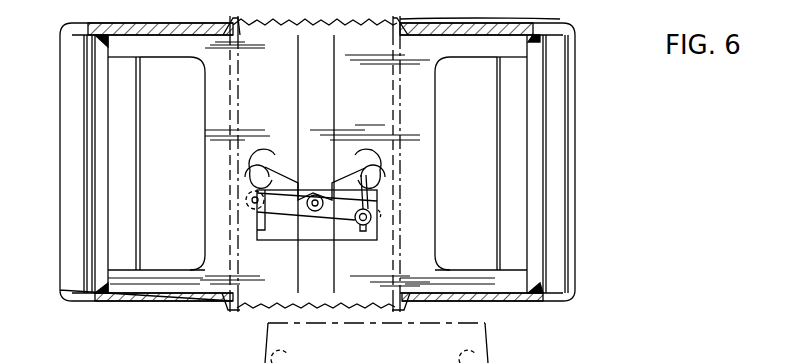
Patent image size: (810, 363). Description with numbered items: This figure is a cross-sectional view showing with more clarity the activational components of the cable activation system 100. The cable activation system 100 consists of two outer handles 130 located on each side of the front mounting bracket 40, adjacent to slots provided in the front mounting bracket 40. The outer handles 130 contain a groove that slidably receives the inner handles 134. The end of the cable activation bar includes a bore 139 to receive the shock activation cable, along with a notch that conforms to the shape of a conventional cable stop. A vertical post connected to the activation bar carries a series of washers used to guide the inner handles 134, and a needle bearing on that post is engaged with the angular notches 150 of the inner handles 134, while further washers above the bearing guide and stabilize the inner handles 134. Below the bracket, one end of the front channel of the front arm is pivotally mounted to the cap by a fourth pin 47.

The cable activation system 100 is at (195, 18).
The front mounting bracket 40 is at (560, 19).
The inner handles 134 is at (125, 245).
The angular notches 150 is at (275, 153).
The outer handles 130 is at (72, 288).
The bore 139 is at (370, 210).
The fourth pin 47 is at (490, 358).